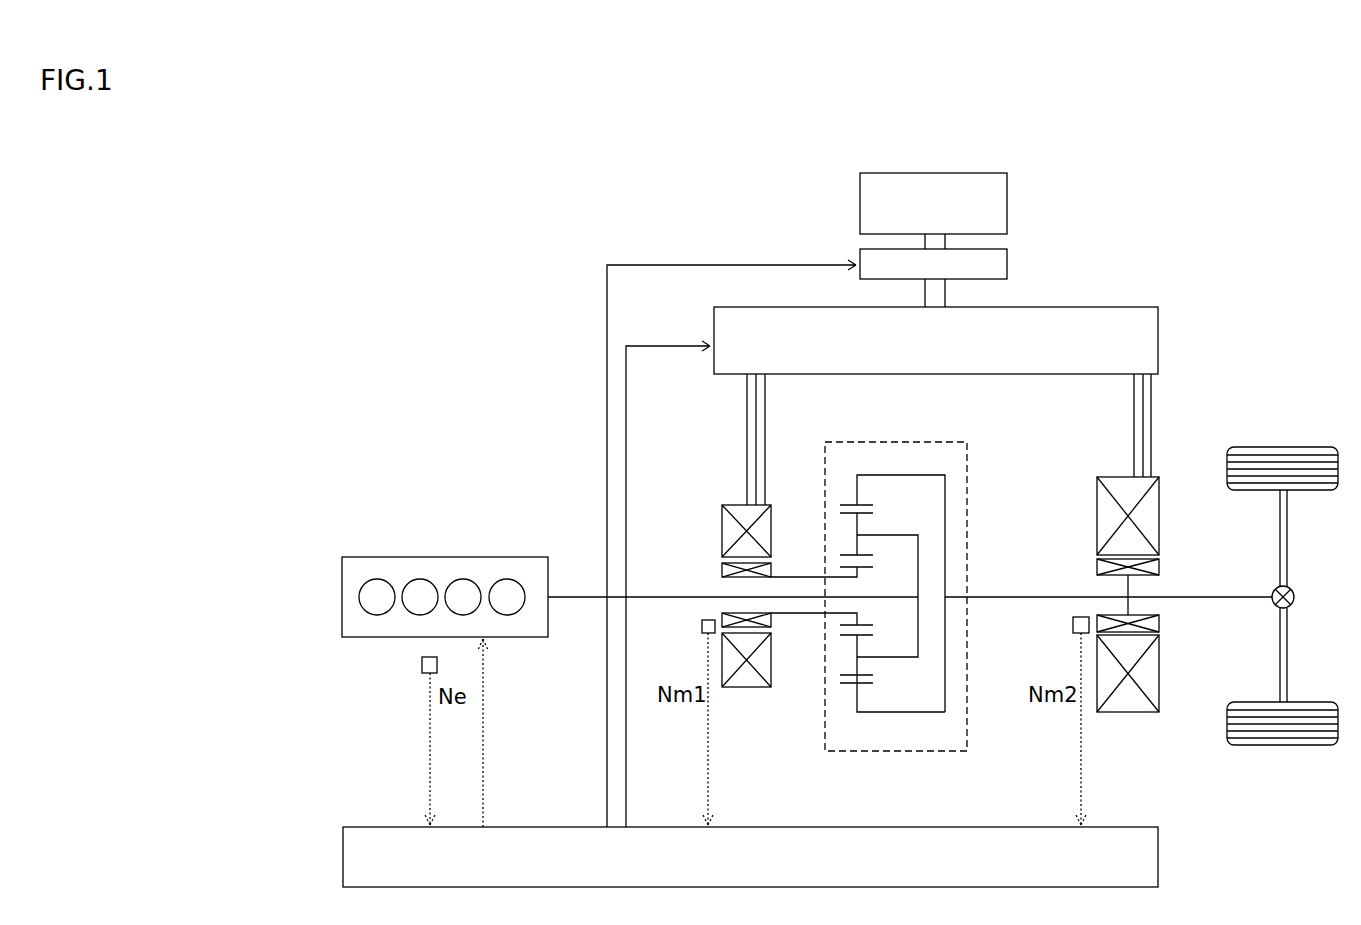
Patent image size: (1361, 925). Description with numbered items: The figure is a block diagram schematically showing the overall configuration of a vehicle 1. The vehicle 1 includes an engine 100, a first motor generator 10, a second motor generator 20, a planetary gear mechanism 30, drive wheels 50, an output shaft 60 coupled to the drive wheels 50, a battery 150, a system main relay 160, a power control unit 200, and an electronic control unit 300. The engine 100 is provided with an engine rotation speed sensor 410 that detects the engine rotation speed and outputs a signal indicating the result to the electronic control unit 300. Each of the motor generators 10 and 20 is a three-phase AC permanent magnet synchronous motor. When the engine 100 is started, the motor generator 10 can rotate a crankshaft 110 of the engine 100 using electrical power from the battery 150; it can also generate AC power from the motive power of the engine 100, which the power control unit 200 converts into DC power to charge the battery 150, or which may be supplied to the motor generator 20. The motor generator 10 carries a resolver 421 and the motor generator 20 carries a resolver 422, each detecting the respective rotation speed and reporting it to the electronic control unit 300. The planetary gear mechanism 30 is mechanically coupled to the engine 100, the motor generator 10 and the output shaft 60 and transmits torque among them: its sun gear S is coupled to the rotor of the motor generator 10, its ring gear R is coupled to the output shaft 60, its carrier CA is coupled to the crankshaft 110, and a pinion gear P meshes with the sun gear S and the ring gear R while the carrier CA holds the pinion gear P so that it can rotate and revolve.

The vehicle 1 is at (1150, 173).
The motor generator (first rotating electrical machine) 10 is at (731, 503).
The motor generator (second rotating electrical machine) 20 is at (1113, 475).
The planetary gear mechanism 30 is at (878, 582).
The drive wheels 50 is at (1306, 445).
The output shaft 60 is at (1212, 594).
The engine 100 is at (382, 556).
The crankshaft 110 is at (572, 594).
The battery 150 is at (1008, 199).
The system main relay (SMR) 160 is at (1008, 262).
The power control unit (PCU) 200 is at (1104, 306).
The electronic control unit (ECU) 300 is at (1114, 826).
The engine rotation speed sensor 410 is at (420, 665).
The resolver 421 is at (701, 627).
The resolver 422 is at (1072, 626).
The ring gear R is at (853, 500).
The pinion gear P is at (846, 518).
The carrier CA is at (912, 533).
The sun gear S is at (862, 570).